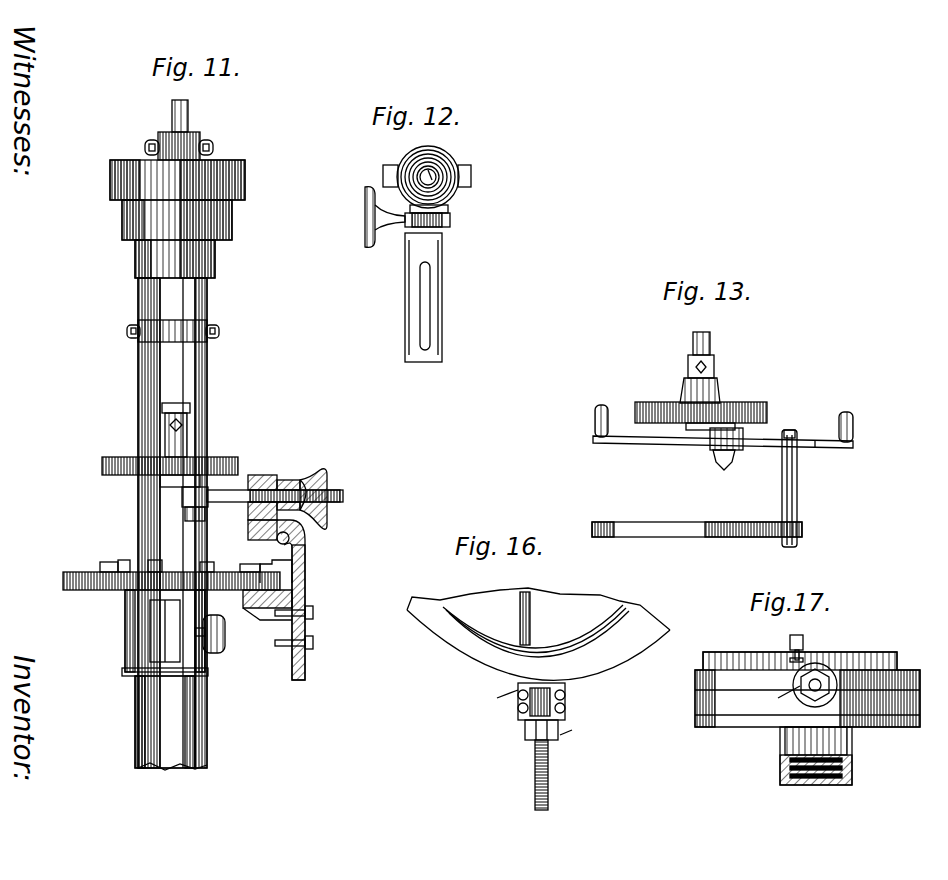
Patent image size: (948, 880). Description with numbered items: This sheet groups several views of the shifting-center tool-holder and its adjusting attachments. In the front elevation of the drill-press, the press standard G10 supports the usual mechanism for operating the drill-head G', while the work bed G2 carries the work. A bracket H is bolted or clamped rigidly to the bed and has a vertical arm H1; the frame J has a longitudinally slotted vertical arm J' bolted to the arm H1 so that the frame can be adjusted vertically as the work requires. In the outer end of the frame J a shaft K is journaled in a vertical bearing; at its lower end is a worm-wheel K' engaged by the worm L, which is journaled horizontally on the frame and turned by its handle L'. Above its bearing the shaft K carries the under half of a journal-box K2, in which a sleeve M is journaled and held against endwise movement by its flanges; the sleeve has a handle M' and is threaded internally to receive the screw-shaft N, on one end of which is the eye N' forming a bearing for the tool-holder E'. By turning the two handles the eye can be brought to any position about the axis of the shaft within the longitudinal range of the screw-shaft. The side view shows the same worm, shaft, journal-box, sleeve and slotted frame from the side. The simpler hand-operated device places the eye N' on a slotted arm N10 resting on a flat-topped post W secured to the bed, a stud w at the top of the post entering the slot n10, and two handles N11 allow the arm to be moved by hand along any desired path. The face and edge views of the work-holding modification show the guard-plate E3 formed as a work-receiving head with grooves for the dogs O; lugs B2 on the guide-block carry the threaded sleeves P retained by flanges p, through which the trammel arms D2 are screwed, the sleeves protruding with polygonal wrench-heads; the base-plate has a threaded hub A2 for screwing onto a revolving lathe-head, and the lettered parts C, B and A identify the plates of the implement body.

In FIG. 11, the press standard G10 is at (197, 387).
In FIG. 11, the drill-head G' is at (214, 430).
In FIG. 11, the work bed G2 is at (78, 572).
In FIG. 11, the eye N' is at (153, 502).
In FIG. 13, the eye N' is at (711, 460).
In FIG. 11, the tool-holder E' is at (178, 521).
In FIG. 11, the screw-shaft N is at (296, 503).
In FIG. 12, the screw-shaft N is at (449, 175).
In FIG. 11, the journal-box K2 is at (262, 475).
In FIG. 12, the journal-box K2 is at (462, 179).
In FIG. 11, the sleeve M is at (309, 473).
In FIG. 11, the handle M' is at (344, 497).
In FIG. 12, the handle M' is at (453, 210).
In FIG. 11, the shaft K is at (250, 528).
In FIG. 11, the worm-wheel K' is at (255, 548).
In FIG. 11, the frame J is at (317, 604).
In FIG. 12, the frame J is at (444, 297).
In FIG. 11, the worm L is at (324, 600).
In FIG. 12, the worm L is at (439, 232).
In FIG. 12, the handle L' is at (381, 235).
In FIG. 11, the bracket H is at (288, 570).
In FIG. 11, the vertical arm J' is at (314, 627).
In FIG. 11, the vertical arm H1 is at (282, 640).
In FIG. 13, the arm N10 is at (660, 443).
In FIG. 13, the slot n10 is at (815, 448).
In FIG. 13, the handles N11 is at (853, 428).
In FIG. 13, the post W is at (797, 482).
In FIG. 13, the stud w is at (790, 432).
In FIG. 16, the curved segment C is at (615, 653).
In FIG. 17, the curved segment C is at (722, 676).
In FIG. 16, the flange or guard-plate E3 is at (552, 618).
In FIG. 17, the flange or guard-plate E3 is at (874, 638).
In FIG. 16, the lugs B2 is at (565, 690).
In FIG. 17, the lugs B2 is at (808, 706).
In FIG. 16, the flanges p is at (531, 716).
In FIG. 17, the flanges p is at (781, 700).
In FIG. 16, the interiorly-threaded sleeve P is at (525, 720).
In FIG. 16, the arm D2 is at (548, 770).
In FIG. 17, the arm D2 is at (832, 690).
In FIG. 17, the bar B is at (734, 703).
In FIG. 17, the dogs O is at (803, 641).
In FIG. 17, the interiorly-threaded hub A2 is at (852, 742).
In FIG. 17, the frame A is at (905, 727).